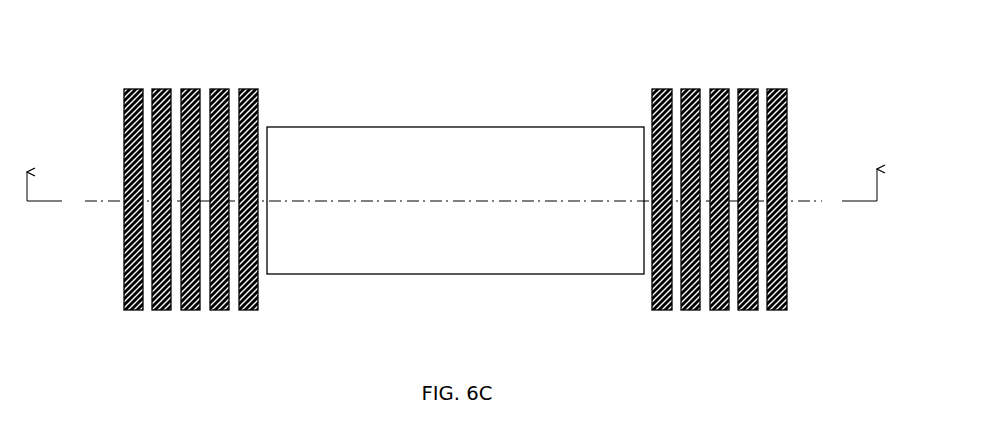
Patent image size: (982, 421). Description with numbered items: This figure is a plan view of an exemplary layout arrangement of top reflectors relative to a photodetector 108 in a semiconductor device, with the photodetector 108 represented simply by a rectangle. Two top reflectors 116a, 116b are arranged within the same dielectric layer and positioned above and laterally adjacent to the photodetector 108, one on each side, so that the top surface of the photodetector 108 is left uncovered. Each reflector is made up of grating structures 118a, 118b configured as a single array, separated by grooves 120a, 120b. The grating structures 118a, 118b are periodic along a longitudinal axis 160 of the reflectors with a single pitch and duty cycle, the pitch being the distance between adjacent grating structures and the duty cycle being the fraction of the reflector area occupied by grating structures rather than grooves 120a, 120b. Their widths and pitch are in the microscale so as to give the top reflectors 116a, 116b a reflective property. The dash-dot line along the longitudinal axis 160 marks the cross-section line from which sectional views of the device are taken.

The photodetector 108 is at (510, 127).
The top reflector 116a is at (190, 155).
The top reflector 116b is at (724, 158).
The grating structure 118a is at (212, 174).
The grating structure 118b is at (767, 179).
The groove 120a is at (149, 103).
The groove 120b is at (674, 113).
The longitudinal axis 160 is at (814, 203).